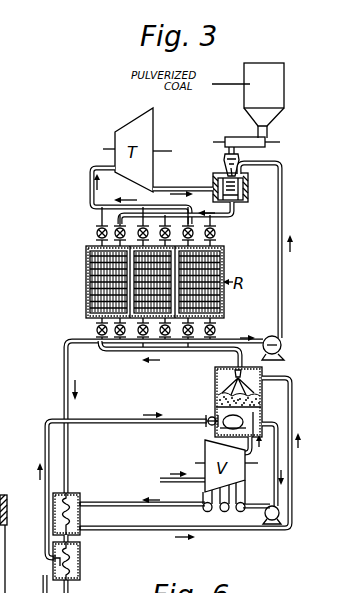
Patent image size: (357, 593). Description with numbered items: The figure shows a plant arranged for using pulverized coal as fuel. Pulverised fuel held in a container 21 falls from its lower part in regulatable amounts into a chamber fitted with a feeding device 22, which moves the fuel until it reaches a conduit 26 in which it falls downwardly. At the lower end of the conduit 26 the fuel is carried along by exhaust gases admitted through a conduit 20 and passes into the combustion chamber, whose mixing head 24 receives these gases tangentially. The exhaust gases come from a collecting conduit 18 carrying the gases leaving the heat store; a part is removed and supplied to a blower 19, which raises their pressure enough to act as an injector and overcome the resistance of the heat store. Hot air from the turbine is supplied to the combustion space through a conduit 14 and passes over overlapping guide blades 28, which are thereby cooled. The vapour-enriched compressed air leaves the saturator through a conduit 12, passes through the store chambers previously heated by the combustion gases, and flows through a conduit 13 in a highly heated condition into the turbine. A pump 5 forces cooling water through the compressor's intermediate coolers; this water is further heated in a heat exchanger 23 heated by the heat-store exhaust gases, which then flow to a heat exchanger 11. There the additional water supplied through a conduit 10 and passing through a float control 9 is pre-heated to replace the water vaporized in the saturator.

The pump 5 is at (214, 386).
The float control 9 is at (206, 426).
The conduit 10 is at (119, 418).
The surface heat exchanger 11 is at (82, 568).
The conduit 12 is at (168, 357).
The conduit 13 is at (104, 207).
The conduit 14 is at (165, 188).
The collecting conduit 18 is at (237, 341).
The blower 19 is at (270, 337).
The conduit 20 is at (279, 255).
The container 21 is at (262, 73).
The feeding device 22 is at (240, 137).
The heat exchanger 23 is at (87, 481).
The mixing head 24 is at (246, 178).
The conduit 26 is at (226, 149).
The guide blades 28 is at (239, 201).